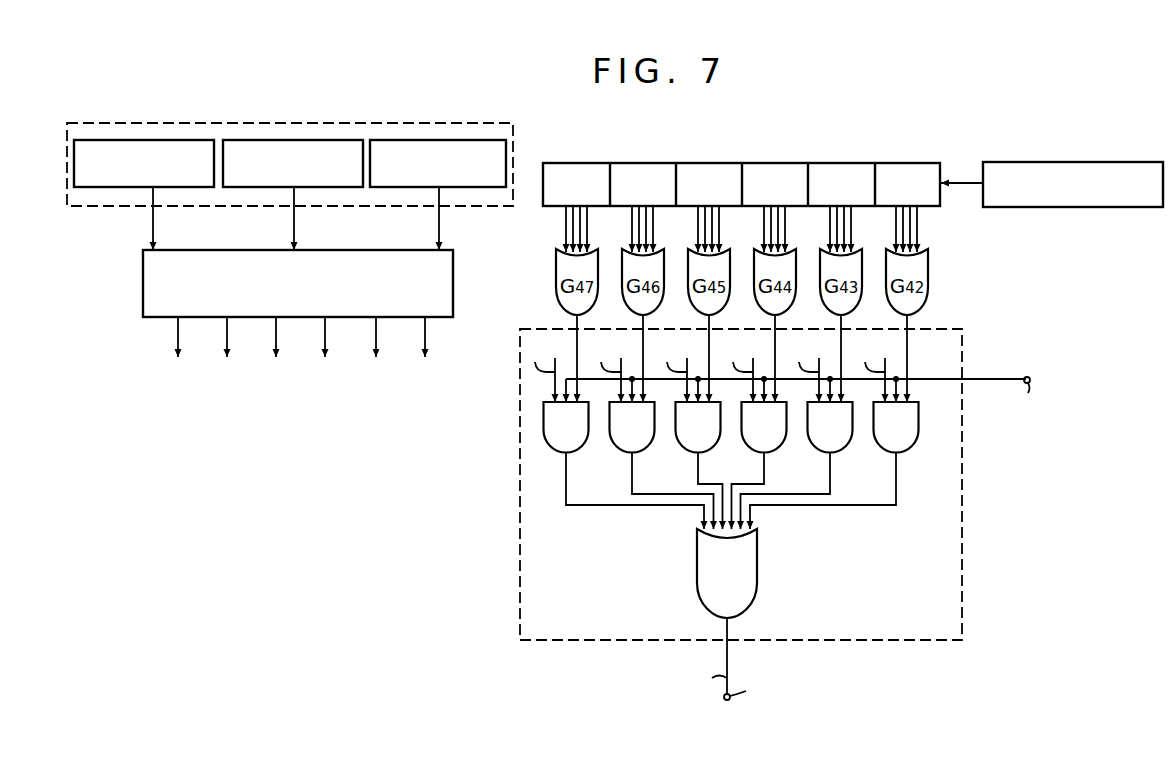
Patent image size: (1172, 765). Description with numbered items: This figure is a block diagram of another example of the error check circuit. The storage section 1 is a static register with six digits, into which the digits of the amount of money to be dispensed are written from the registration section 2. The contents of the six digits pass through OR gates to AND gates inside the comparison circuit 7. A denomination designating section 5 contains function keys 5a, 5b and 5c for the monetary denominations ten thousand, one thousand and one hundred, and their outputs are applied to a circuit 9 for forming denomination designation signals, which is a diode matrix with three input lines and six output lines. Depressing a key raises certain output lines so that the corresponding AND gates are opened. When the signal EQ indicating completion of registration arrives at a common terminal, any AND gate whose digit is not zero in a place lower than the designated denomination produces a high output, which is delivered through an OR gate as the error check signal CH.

The storage section 1 is at (777, 163).
The registration section 2 is at (1072, 162).
The denomination designating section 5 is at (269, 123).
The function key 5a is at (441, 141).
The function key 5b is at (313, 141).
The function key 5c is at (155, 141).
The comparison circuit 7 is at (962, 527).
The circuit for forming denomination designation signals 9 is at (453, 268).